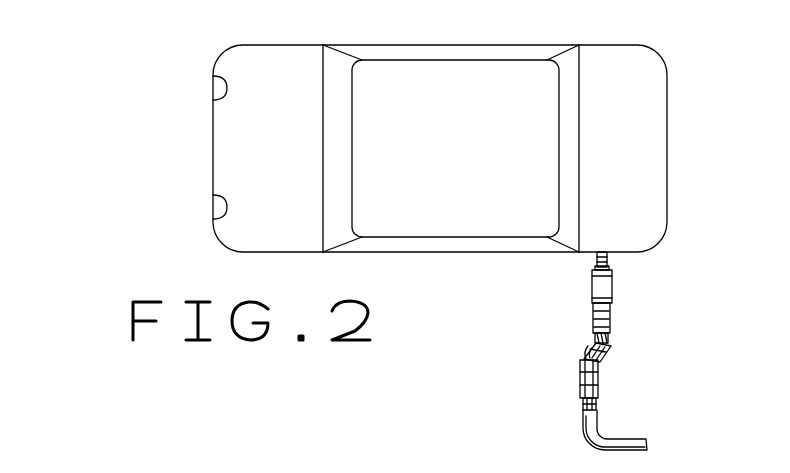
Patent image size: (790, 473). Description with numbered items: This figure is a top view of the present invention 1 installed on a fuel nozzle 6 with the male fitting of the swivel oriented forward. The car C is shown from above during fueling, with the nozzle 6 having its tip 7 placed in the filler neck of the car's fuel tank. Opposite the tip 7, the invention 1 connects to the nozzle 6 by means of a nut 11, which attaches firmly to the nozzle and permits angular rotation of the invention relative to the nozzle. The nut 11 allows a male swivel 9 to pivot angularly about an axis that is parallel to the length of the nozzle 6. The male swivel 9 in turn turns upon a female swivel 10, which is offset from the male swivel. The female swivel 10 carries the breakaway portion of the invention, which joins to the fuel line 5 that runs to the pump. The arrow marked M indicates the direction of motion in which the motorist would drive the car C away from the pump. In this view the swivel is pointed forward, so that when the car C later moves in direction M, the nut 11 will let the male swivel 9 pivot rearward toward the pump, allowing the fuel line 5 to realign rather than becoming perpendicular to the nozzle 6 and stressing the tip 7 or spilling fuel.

The car C is at (411, 78).
The direction of motion M is at (195, 146).
The present invention 1 is at (560, 395).
The fuel line 5 is at (628, 440).
The nozzle 6 is at (605, 288).
The tip 7 is at (608, 258).
The male swivel 9 is at (605, 350).
The female swivel 10 is at (588, 352).
The nut 11 is at (612, 338).